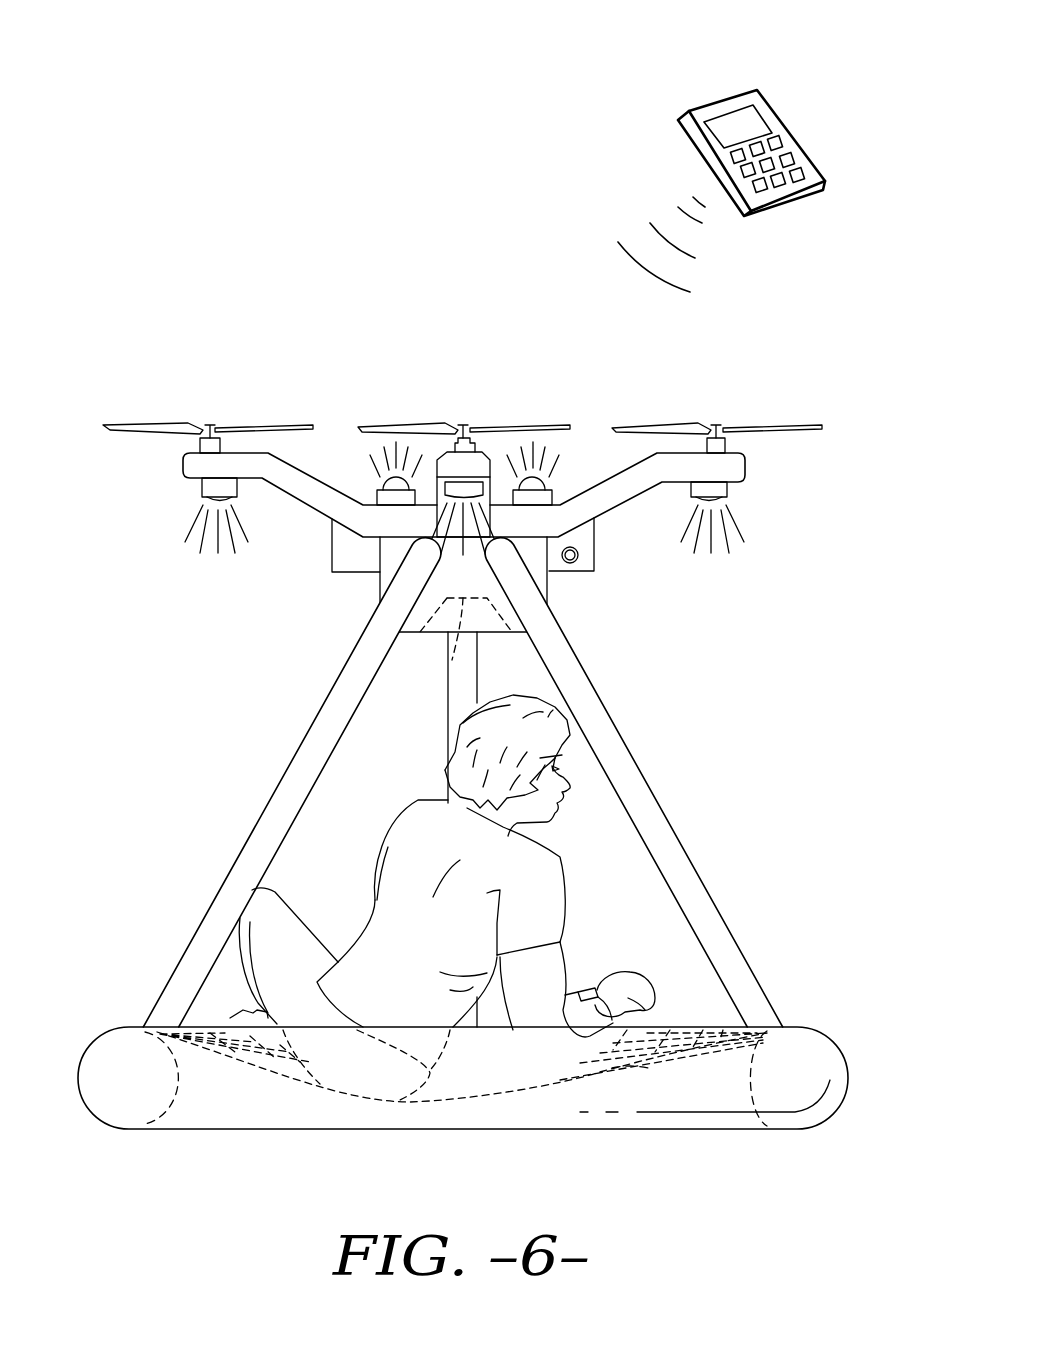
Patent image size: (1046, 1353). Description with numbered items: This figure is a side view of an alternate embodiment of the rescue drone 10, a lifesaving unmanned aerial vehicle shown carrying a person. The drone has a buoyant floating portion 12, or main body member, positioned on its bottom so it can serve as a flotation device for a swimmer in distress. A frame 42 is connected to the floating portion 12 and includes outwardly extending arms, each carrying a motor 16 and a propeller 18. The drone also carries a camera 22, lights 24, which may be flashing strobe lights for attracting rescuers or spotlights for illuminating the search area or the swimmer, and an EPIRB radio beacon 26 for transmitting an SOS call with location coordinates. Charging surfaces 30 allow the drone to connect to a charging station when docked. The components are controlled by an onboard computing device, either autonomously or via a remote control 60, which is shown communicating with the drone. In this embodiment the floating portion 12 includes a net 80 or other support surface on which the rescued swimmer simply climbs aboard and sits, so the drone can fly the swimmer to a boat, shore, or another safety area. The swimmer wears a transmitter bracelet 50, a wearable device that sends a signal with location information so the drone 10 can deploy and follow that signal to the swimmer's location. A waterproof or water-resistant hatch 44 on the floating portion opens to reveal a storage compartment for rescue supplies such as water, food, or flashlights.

The rescue drone 10 is at (276, 354).
The floating portion 12 is at (242, 1110).
The motor 16 is at (205, 446).
The propeller 18 is at (153, 422).
The camera 22 is at (600, 560).
The lights 24 is at (197, 487).
The EPIRB radio beacon 26 is at (346, 550).
The charging surfaces 30 is at (452, 660).
The frame 42 is at (285, 800).
The hatch 44 is at (715, 1023).
The transmitter bracelet 50 is at (588, 987).
The remote control 60 is at (774, 100).
The net 80 is at (631, 1067).